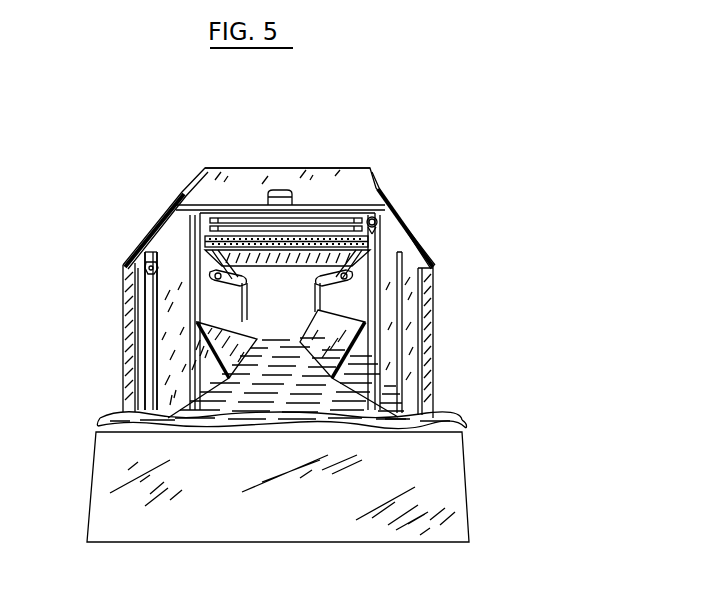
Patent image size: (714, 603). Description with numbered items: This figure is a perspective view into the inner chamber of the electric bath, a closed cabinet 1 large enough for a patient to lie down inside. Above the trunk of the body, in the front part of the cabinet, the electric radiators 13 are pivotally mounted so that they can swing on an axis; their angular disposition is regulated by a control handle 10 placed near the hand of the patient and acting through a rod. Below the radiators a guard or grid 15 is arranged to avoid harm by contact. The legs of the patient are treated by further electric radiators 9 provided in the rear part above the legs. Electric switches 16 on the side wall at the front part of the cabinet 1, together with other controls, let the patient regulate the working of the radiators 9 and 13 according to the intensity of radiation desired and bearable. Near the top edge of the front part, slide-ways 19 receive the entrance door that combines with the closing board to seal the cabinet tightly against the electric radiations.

The closed cabinet 1 is at (430, 312).
The slide-ways 19 is at (233, 180).
The electric radiators 13 is at (318, 215).
The guard or grid 15 is at (378, 218).
The control handle 10 is at (377, 226).
The electric switches 16 is at (152, 272).
The electric radiators 9 is at (315, 282).